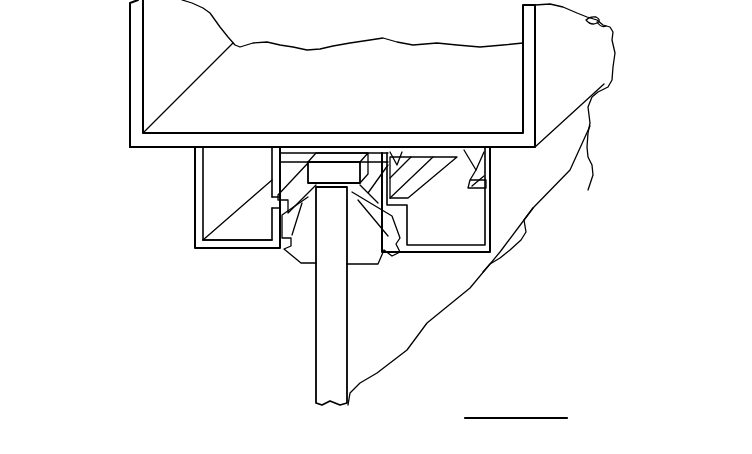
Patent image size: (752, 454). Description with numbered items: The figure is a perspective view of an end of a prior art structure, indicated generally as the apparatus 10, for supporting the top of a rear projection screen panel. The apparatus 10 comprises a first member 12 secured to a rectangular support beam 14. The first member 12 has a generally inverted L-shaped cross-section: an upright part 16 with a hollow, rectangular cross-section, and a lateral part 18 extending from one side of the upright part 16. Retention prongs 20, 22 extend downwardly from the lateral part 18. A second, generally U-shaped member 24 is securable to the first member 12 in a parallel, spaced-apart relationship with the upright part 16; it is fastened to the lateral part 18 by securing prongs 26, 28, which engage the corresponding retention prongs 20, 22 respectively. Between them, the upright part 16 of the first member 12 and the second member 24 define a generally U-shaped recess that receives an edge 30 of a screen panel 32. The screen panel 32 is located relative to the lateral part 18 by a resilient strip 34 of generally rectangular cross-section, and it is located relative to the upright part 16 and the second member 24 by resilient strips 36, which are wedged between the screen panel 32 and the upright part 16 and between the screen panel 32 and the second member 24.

The apparatus 10 is at (122, 171).
The first member 12 is at (197, 217).
The rectangular support beam 14 is at (588, 86).
The upright part 16 is at (220, 250).
The lateral part 18 is at (287, 150).
The retention prong 20 is at (410, 160).
The retention prong 22 is at (476, 150).
The second member 24 is at (517, 203).
The securing prong 26 is at (397, 150).
The securing prong 28 is at (486, 158).
The edge 30 is at (329, 187).
The screen panel 32 is at (428, 323).
The resilient strip 34 is at (331, 167).
The resilient strips 36 is at (295, 252).